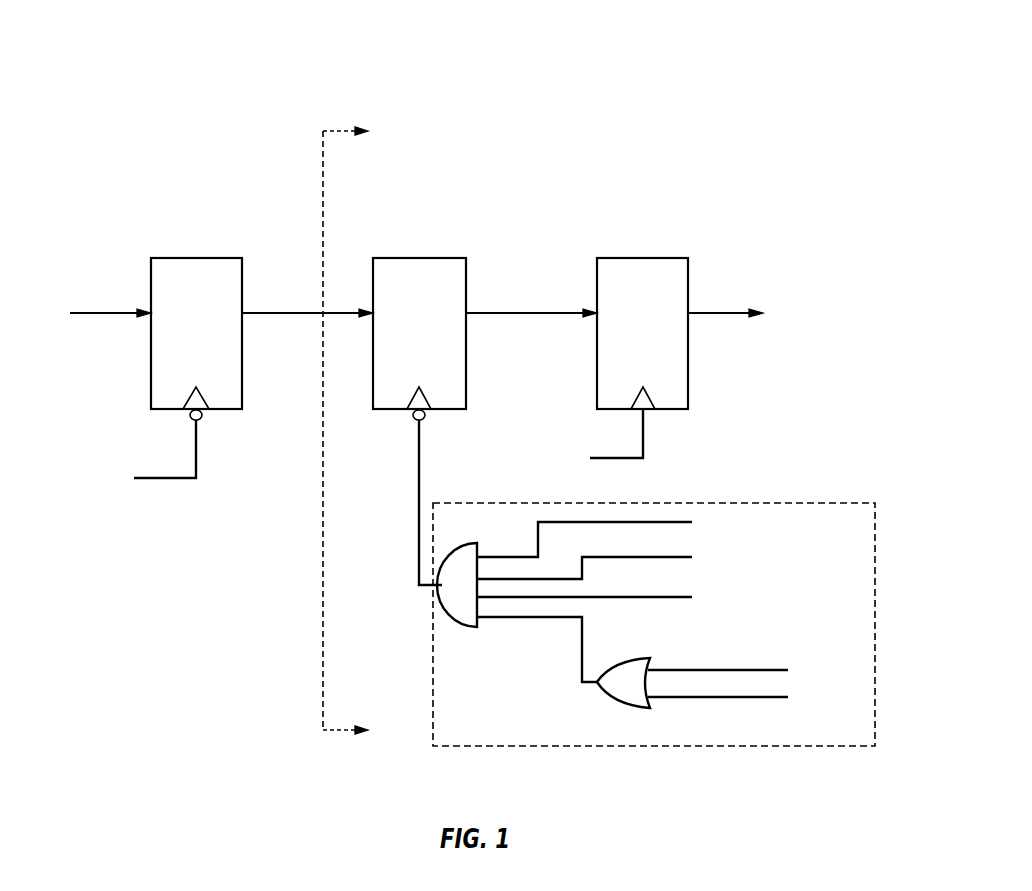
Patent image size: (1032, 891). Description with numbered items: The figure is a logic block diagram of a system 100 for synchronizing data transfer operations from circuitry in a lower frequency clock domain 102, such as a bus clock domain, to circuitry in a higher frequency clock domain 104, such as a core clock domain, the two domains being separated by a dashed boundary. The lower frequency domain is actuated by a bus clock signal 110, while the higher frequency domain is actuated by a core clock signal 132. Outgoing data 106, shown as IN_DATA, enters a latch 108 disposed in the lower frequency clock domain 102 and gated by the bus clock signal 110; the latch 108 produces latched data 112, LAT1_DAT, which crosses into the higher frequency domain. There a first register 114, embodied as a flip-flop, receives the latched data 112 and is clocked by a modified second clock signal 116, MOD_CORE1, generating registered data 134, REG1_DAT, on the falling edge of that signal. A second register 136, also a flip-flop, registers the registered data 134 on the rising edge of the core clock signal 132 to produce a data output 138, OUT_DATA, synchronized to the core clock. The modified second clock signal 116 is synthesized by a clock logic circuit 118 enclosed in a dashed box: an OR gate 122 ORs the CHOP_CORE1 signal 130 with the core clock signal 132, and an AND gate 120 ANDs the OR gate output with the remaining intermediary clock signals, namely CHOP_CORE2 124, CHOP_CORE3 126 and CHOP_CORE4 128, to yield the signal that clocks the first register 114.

The system 100 is at (684, 46).
The lower frequency clock domain 102 is at (305, 138).
The higher frequency clock domain 104 is at (780, 138).
The outgoing data (IN_DATA) 106 is at (115, 318).
The latch 108 is at (151, 258).
The bus clock signal (BUS_CLOCK) 110 is at (165, 477).
The latched data (LAT1_DAT) 112 is at (270, 316).
The first register 114 is at (466, 258).
The modified second clock signal (MOD_CORE1) 116 is at (418, 455).
The clock logic circuit 118 is at (433, 678).
The AND gate 120 is at (462, 627).
The OR gate 122 is at (628, 705).
The CHOP_CORE2 signal 124 is at (676, 522).
The CHOP_CORE3 signal 126 is at (585, 557).
The CHOP_CORE4 signal 128 is at (563, 597).
The CHOP_CORE1 signal 130 is at (787, 663).
The core clock signal (CORE_CLOCK) 132 is at (645, 420).
The registered data (REG1_DAT) 134 is at (550, 315).
The second register 136 is at (688, 258).
The data output (OUT_DATA) 138 is at (715, 313).